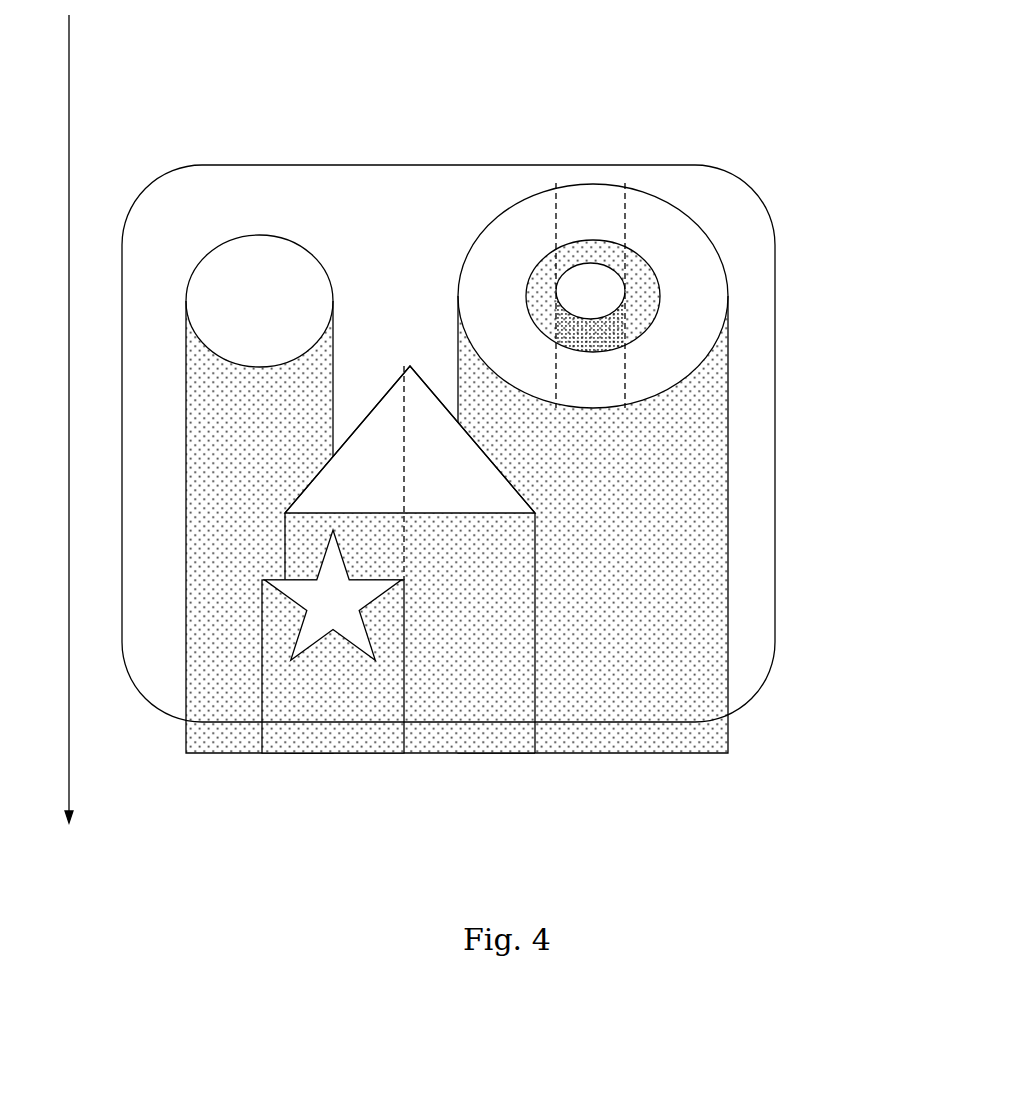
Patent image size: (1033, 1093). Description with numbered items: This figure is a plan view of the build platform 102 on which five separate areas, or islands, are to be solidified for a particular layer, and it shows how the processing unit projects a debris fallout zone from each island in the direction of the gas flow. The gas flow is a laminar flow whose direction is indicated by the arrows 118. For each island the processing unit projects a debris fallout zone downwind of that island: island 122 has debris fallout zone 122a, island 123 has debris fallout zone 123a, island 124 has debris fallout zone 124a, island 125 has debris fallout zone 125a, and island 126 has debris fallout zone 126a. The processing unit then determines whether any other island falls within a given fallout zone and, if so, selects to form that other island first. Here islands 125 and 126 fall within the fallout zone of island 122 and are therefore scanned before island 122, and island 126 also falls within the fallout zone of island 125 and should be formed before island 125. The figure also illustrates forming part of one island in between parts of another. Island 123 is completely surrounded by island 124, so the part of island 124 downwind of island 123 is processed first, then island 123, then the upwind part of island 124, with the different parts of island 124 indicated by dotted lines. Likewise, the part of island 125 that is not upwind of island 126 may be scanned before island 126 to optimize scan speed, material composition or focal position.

The build platform 102 is at (604, 155).
The arrows 118 is at (84, 65).
The island 122 is at (261, 261).
The debris fallout zone 122a is at (228, 635).
The island 123 is at (624, 266).
The debris fallout zone 123a is at (628, 322).
The island 124 is at (697, 344).
The debris fallout zone 124a is at (712, 552).
The island 125 is at (396, 418).
The debris fallout zone 125a is at (466, 703).
The island 126 is at (311, 627).
The debris fallout zone 126a is at (346, 704).